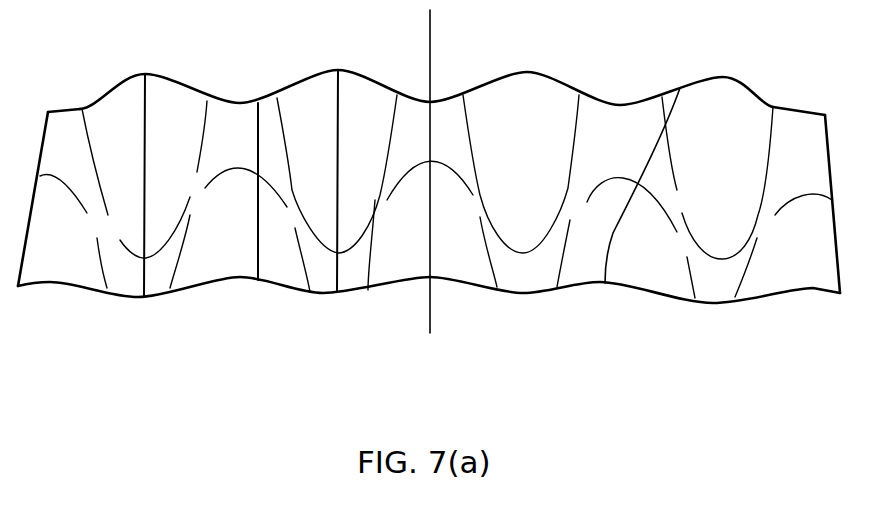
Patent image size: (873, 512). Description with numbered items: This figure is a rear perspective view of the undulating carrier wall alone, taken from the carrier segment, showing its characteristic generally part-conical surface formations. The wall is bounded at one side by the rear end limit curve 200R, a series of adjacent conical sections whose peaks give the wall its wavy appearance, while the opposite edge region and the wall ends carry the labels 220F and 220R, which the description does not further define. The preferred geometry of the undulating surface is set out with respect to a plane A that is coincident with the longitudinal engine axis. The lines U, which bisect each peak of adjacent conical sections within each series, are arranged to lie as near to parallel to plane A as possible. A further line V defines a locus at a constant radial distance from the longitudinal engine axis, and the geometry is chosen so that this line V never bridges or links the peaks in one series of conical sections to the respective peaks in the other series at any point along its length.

The rear end limit curve 200R is at (310, 72).
The front edge portion 220F is at (82, 108).
The rear edge portion 220R is at (72, 287).
The lines bisecting each peak U is at (143, 283).
The line defining a locus at constant radial distance V is at (607, 258).
The plane A is at (433, 28).